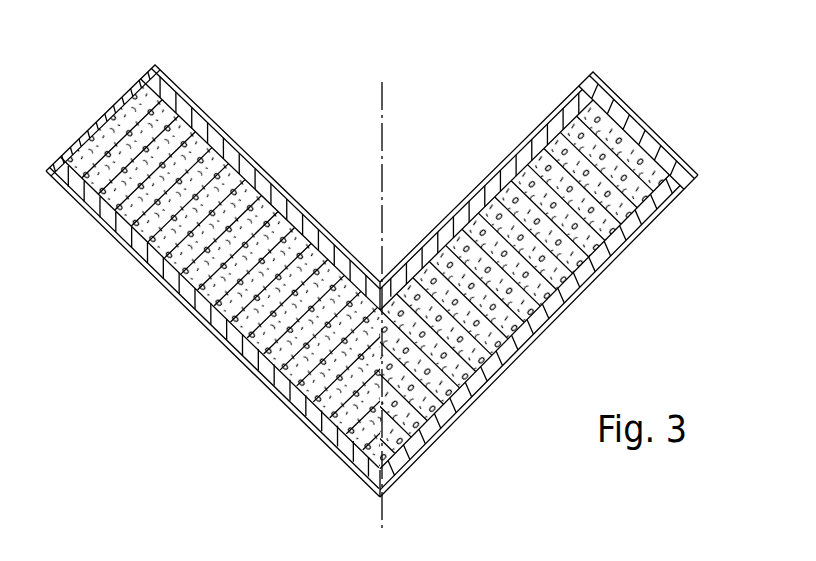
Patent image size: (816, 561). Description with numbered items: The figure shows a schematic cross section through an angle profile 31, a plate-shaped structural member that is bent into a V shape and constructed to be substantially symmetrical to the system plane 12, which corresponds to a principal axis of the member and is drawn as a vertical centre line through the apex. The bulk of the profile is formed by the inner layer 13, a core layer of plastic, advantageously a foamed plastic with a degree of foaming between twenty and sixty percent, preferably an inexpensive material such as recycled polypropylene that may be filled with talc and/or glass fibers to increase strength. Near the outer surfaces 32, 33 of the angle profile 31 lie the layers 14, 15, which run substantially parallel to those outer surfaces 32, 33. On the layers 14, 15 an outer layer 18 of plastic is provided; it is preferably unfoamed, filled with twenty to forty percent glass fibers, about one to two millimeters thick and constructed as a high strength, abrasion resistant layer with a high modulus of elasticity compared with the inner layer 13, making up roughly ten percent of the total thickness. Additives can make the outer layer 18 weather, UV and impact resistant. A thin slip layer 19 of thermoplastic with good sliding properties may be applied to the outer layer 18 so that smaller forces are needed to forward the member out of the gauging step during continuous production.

The system plane 12 is at (383, 114).
The inner layer 13 is at (103, 120).
The layer 14 is at (481, 200).
The layer 15 is at (524, 332).
The outer layer 18 is at (80, 187).
The slip layer 19 is at (127, 232).
The angle profile 31 is at (655, 88).
The outer surface 32 is at (266, 284).
The outer surface 33 is at (264, 366).